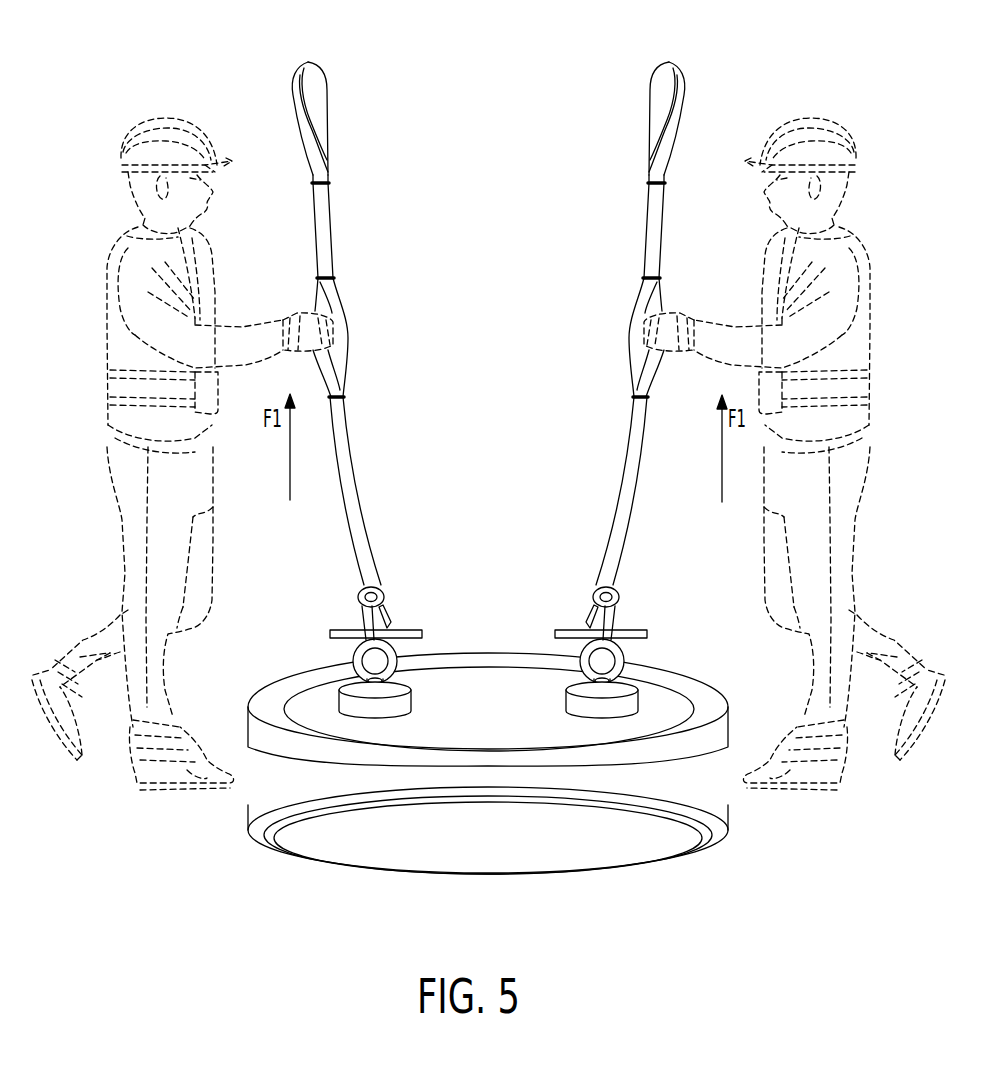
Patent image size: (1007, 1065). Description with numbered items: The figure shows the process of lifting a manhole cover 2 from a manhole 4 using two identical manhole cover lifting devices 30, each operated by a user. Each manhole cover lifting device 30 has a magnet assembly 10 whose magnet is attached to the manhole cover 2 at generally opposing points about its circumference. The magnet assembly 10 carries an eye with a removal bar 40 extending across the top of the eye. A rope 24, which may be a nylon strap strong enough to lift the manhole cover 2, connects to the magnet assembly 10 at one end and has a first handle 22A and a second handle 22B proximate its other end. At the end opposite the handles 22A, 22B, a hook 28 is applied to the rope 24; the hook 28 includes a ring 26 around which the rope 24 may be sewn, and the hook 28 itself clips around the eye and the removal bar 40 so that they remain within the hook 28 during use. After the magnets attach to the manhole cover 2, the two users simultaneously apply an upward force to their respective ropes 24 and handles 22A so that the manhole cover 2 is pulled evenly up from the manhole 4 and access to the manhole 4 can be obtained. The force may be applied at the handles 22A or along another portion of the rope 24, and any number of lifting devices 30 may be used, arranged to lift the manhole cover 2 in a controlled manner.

The manhole cover 2 is at (717, 713).
The manhole 4 is at (697, 803).
The magnet assembly 10 is at (353, 687).
The first handle 22A is at (318, 95).
The second handle 22B is at (344, 337).
The rope 24 is at (316, 243).
The ring 26 is at (373, 599).
The hook 28 is at (387, 620).
The manhole cover lifting device 30 is at (252, 99).
The removal bar 40 is at (425, 634).